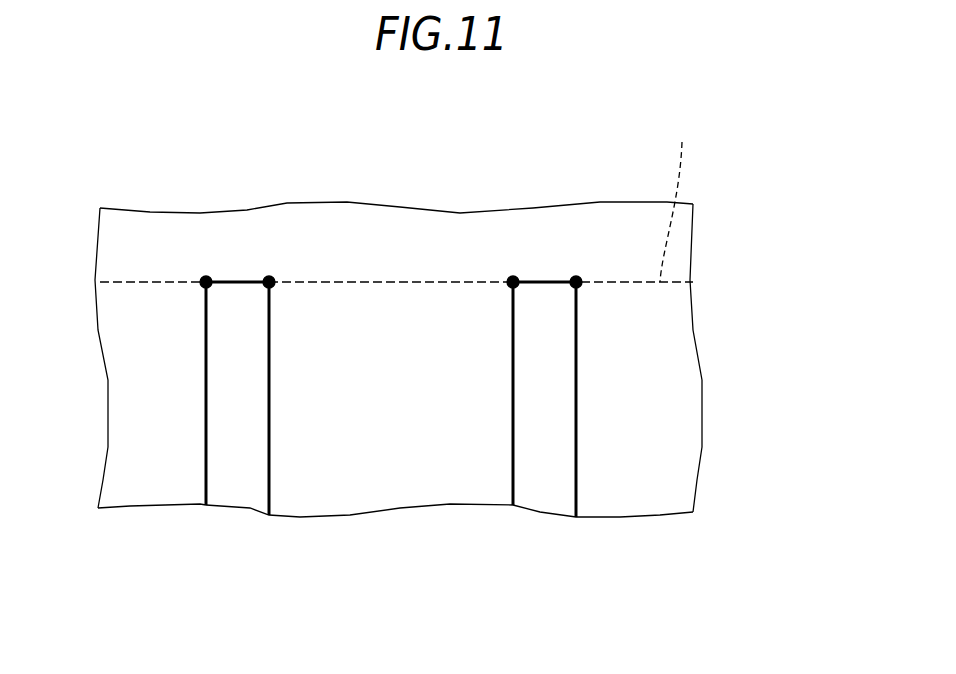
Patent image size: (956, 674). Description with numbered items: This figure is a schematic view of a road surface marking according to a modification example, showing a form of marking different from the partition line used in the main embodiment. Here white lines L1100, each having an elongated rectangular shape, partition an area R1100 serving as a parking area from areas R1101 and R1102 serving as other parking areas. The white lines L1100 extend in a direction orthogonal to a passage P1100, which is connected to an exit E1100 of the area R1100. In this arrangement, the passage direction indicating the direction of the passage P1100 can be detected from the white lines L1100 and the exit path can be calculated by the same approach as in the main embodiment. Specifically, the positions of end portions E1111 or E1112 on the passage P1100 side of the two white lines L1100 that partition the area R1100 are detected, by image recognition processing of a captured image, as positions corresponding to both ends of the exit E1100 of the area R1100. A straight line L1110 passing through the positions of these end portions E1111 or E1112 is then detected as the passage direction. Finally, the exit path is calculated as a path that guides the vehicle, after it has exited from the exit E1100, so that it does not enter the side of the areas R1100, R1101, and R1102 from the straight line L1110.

The exit E1100 is at (398, 303).
The end portion E1111 is at (268, 282).
The end portion E1112 is at (206, 282).
The white line L1100 is at (207, 467).
The straight line L1110 is at (681, 198).
The passage P1100 is at (667, 258).
The area R1100 is at (370, 483).
The area R1101 is at (128, 485).
The area R1102 is at (657, 483).